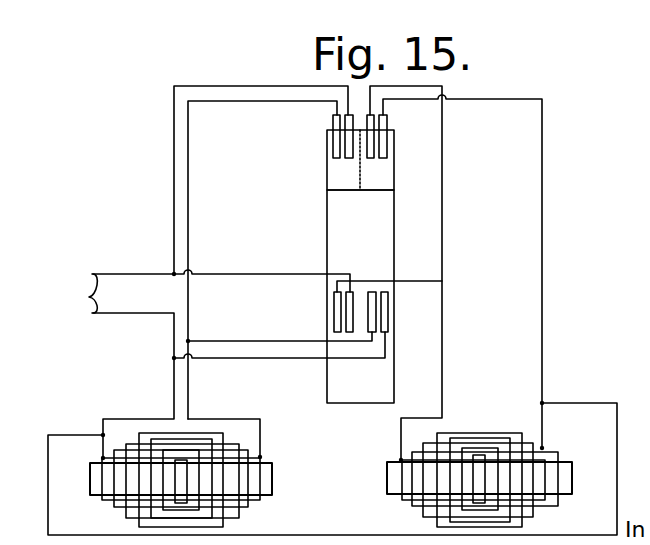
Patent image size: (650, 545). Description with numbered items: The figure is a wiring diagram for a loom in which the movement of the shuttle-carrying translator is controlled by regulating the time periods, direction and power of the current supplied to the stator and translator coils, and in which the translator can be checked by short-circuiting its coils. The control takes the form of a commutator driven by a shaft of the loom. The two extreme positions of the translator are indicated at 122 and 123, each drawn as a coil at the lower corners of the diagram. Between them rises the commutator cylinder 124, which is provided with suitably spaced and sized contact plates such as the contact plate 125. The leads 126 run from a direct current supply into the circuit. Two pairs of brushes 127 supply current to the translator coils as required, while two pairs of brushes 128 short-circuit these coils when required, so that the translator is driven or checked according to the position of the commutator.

The extreme position of the translator 122 is at (270, 472).
The extreme position of the translator 123 is at (596, 455).
The commutator cylinder 124 is at (396, 207).
The contact plate 125 is at (330, 173).
The leads 126 is at (75, 293).
The brushes 127 is at (333, 147).
The brushes 128 is at (383, 140).